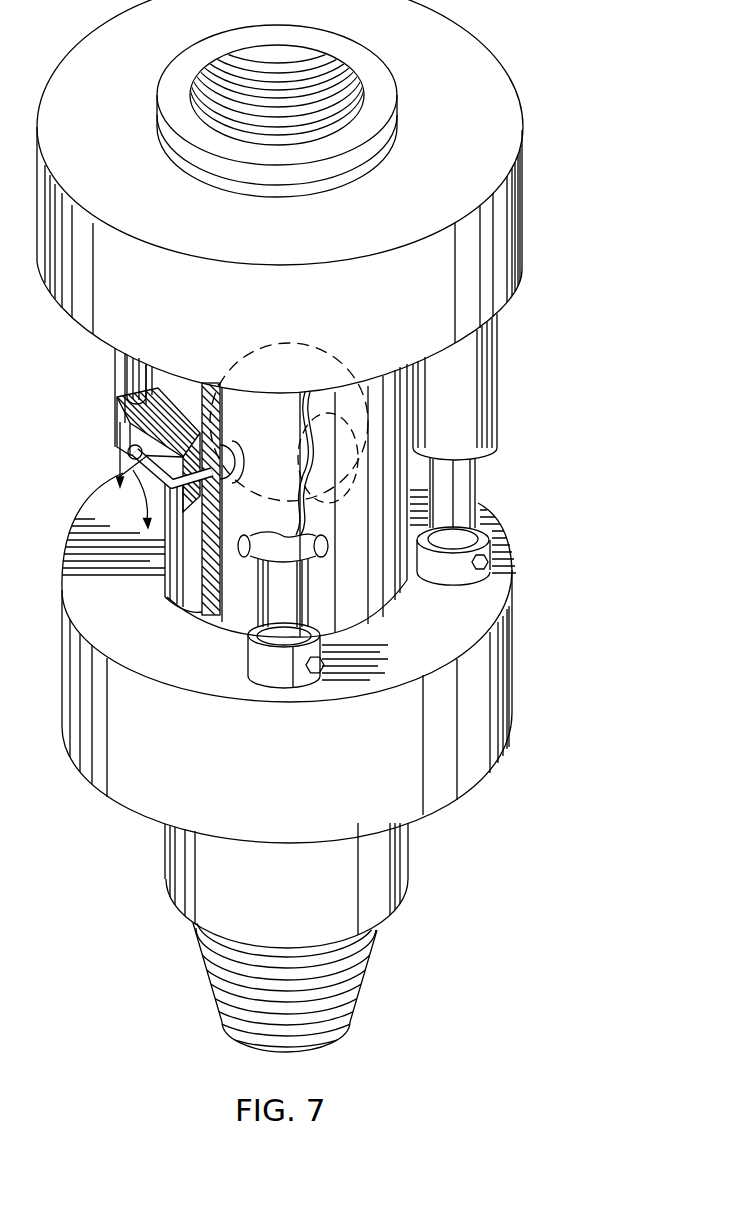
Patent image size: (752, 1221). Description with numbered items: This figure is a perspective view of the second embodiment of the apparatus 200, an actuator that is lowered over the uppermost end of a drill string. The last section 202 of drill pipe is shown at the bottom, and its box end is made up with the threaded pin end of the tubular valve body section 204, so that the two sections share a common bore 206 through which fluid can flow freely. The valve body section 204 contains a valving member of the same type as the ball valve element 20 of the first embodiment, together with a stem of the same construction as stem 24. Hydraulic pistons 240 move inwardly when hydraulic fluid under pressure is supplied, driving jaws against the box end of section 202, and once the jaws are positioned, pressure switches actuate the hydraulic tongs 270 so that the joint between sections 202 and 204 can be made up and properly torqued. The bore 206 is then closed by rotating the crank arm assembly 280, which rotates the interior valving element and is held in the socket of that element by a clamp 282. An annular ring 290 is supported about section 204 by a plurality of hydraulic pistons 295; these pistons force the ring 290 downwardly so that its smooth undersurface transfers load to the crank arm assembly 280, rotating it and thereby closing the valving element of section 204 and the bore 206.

The ball valve element 20 is at (312, 338).
The stem 24 is at (236, 473).
The apparatus 200 is at (540, 267).
The last section of drill pipe 202 is at (303, 902).
The tubular valve body section 204 is at (205, 600).
The bore 206 is at (316, 104).
The hydraulic piston 240 is at (270, 608).
The hydraulic tongs 270 is at (508, 134).
The crank arm assembly 280 is at (138, 472).
The clamp 282 is at (175, 437).
The annular ring 290 is at (127, 428).
The hydraulic piston 295 is at (127, 366).